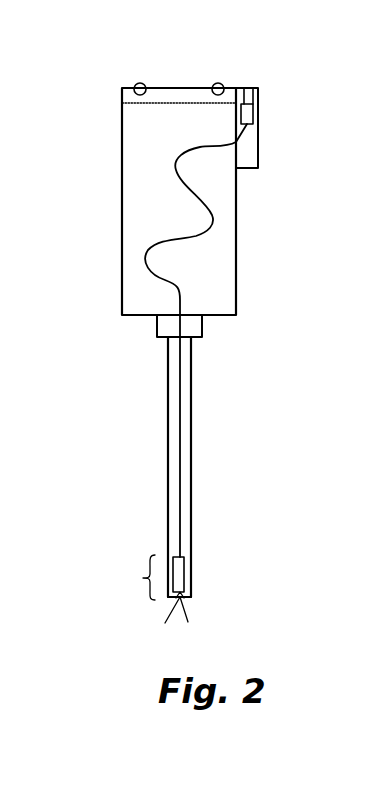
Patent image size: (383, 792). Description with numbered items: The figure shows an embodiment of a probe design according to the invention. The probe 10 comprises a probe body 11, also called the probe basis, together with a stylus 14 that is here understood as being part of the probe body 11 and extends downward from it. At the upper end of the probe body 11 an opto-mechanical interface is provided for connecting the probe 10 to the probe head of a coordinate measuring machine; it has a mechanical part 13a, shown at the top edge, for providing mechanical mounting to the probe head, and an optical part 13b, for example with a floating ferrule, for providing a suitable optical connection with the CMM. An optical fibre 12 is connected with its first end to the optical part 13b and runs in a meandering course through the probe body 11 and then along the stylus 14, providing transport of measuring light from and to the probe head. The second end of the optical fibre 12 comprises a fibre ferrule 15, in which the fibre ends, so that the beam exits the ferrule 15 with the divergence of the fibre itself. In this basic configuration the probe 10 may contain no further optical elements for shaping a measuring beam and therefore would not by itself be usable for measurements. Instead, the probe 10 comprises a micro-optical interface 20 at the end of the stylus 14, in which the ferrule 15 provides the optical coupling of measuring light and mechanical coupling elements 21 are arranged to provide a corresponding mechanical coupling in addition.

The probe 10 is at (238, 29).
The probe body 11 is at (215, 212).
The optical fibre 12 is at (226, 340).
The mechanical part 13a is at (139, 69).
The optical part 13b is at (293, 114).
The stylus 14 is at (226, 467).
The fibre ferrule 15 is at (228, 565).
The micro-optical interface 20 is at (129, 577).
The mechanical coupling elements 21 is at (214, 617).